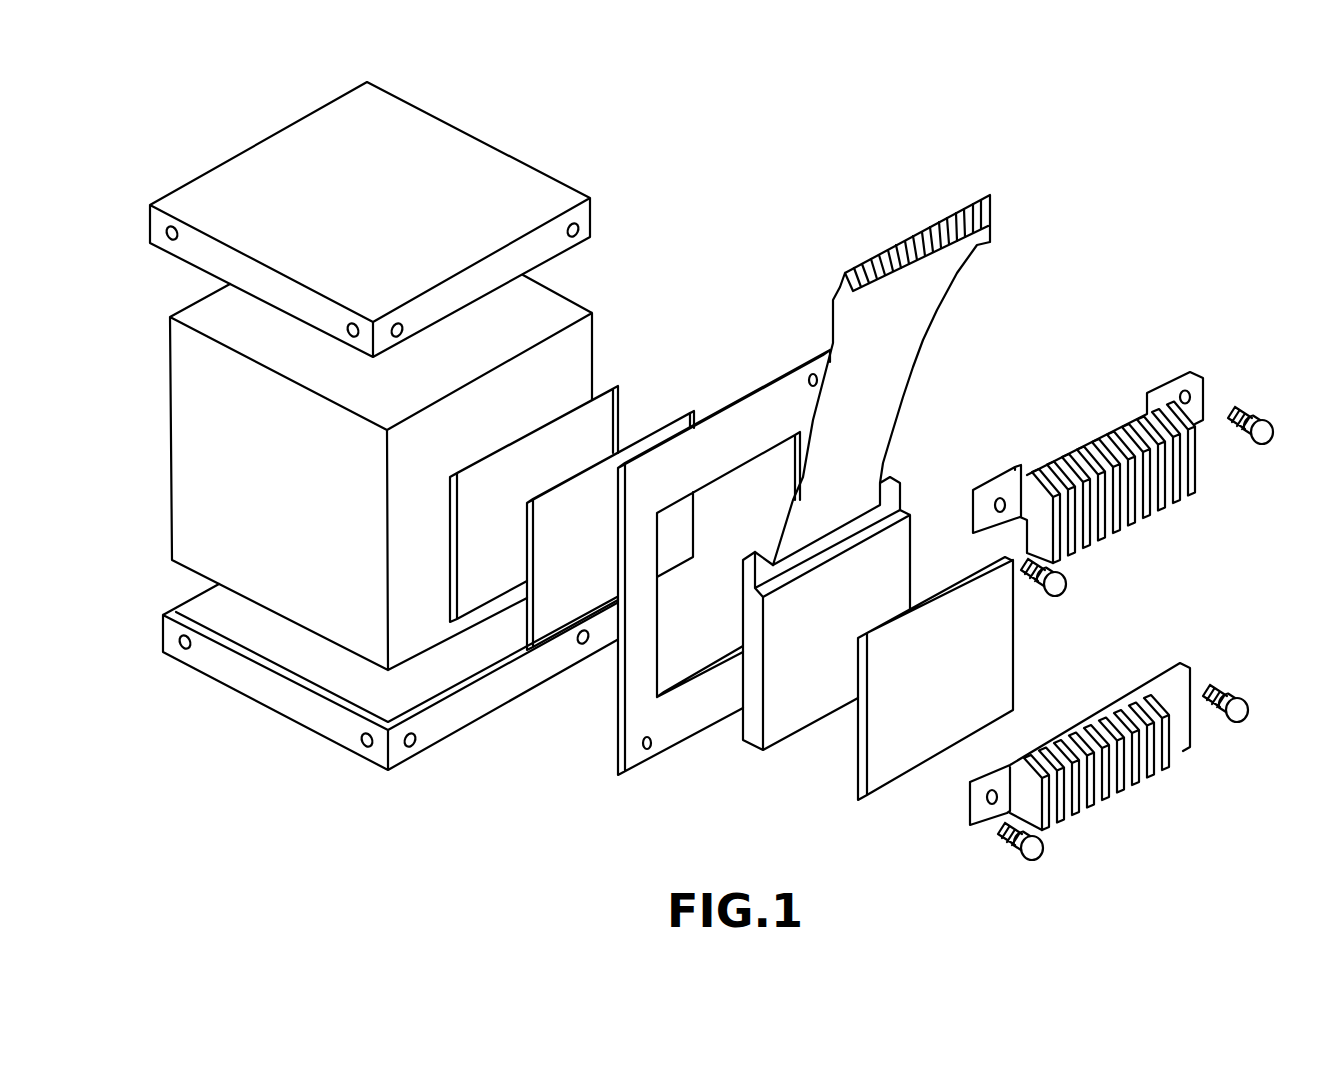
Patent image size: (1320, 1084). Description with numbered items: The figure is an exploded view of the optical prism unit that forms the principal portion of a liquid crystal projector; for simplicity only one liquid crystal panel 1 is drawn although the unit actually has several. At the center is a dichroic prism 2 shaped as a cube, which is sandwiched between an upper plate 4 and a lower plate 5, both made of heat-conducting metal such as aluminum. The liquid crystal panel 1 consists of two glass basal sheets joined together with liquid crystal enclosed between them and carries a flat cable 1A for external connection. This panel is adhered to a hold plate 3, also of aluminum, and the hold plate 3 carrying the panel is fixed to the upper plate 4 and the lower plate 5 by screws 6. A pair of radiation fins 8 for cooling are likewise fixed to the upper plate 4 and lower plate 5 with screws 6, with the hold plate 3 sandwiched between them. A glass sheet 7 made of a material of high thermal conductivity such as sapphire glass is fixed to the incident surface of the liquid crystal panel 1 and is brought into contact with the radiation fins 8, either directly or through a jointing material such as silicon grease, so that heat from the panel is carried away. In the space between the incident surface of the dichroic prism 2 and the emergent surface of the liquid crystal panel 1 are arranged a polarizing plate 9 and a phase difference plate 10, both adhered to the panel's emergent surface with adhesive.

The liquid crystal panel 1 is at (745, 752).
The flexible cable 1A is at (996, 203).
The dichroic prism 2 is at (212, 464).
The hold plate 3 is at (617, 733).
The upper plate 4 is at (523, 162).
The lower plate 5 is at (283, 695).
The screws 6 is at (1273, 437).
The glass sheet 7 is at (862, 793).
The radiation fins 8 is at (1170, 383).
The polarizing plate 9 is at (685, 410).
The phase difference plate 10 is at (603, 388).